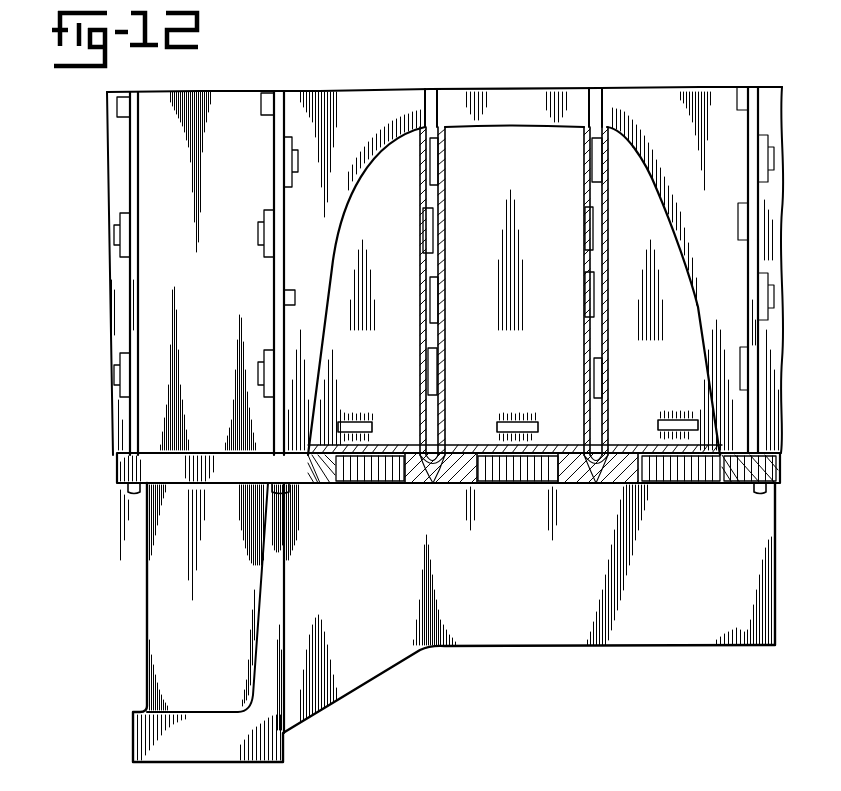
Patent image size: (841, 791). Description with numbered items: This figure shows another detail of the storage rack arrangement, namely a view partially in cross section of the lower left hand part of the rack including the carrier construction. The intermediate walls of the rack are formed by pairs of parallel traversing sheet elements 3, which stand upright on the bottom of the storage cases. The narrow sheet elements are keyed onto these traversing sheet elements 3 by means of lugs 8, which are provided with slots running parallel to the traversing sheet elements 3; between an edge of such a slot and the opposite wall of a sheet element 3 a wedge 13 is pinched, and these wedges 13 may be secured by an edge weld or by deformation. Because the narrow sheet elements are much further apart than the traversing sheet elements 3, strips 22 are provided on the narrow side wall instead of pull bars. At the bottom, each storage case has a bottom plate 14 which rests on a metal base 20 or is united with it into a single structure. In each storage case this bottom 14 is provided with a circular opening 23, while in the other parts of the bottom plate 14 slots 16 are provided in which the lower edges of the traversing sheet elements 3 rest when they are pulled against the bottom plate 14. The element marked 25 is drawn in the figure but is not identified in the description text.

The traversing sheet element 3 is at (421, 338).
The lug 8 is at (439, 176).
The wedge 13 is at (440, 295).
The bottom plate 14 is at (430, 470).
The slot 16 is at (456, 462).
The metal base 20 is at (288, 603).
The strip 22 is at (108, 183).
The circular opening 23 is at (350, 487).
The bar 25 is at (371, 432).